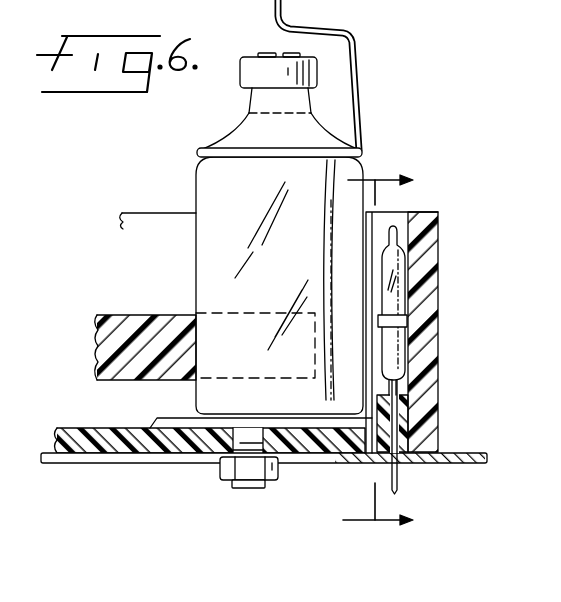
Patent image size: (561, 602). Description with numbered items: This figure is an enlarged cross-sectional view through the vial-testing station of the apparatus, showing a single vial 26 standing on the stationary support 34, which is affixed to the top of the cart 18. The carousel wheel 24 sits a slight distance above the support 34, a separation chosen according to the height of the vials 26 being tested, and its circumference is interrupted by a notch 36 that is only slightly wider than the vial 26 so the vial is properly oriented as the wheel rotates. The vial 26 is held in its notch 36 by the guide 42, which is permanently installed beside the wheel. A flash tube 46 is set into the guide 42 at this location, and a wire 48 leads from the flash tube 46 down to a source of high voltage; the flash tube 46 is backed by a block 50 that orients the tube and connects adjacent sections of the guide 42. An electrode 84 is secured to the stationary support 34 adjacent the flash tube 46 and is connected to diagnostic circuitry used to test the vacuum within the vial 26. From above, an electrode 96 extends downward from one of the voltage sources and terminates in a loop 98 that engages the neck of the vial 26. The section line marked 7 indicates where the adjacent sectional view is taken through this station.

The cart 18 is at (473, 452).
The carousel wheel 24 is at (120, 318).
The vial 26 is at (214, 183).
The stationary support 34 is at (84, 398).
The notch 36 is at (200, 322).
The guide 42 is at (133, 212).
The flash tube 46 is at (405, 285).
The wire 48 is at (398, 484).
The block 50 is at (438, 312).
The electrode 84 is at (163, 420).
The electrode 96 is at (354, 34).
The loop 98 is at (222, 156).
The section line 7- 7 is at (378, 354).